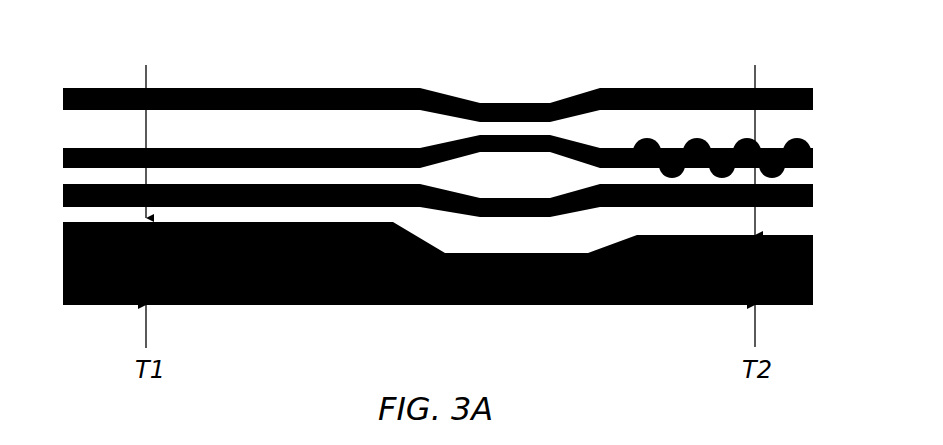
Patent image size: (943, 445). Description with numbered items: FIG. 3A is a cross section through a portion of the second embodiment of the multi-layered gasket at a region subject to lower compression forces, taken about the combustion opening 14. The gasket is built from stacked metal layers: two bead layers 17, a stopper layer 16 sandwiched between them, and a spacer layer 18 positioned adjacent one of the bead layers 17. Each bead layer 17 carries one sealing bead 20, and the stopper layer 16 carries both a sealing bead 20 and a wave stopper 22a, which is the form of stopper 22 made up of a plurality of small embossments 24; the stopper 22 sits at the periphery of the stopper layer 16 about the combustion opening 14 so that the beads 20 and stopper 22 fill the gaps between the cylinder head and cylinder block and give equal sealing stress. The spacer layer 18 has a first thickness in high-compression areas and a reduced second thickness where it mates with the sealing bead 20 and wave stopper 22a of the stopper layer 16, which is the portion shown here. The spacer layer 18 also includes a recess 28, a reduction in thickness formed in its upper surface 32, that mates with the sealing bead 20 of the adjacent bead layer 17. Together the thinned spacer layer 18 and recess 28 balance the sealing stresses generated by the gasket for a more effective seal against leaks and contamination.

The combustion opening 14 is at (844, 211).
The stopper layer 16 is at (63, 155).
The bead layer 17 is at (63, 98).
The spacer layer 18 is at (63, 297).
The sealing bead 20 is at (500, 103).
The stopper 22 is at (768, 140).
The wave stopper 22a is at (813, 155).
The small embossments 24 is at (700, 140).
The recess 28 is at (482, 245).
The upper surface 32 is at (270, 222).